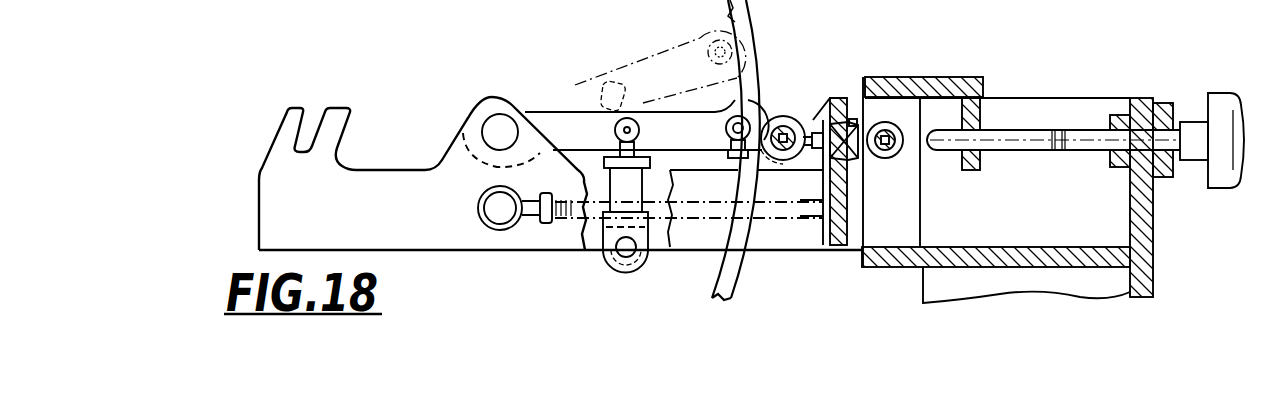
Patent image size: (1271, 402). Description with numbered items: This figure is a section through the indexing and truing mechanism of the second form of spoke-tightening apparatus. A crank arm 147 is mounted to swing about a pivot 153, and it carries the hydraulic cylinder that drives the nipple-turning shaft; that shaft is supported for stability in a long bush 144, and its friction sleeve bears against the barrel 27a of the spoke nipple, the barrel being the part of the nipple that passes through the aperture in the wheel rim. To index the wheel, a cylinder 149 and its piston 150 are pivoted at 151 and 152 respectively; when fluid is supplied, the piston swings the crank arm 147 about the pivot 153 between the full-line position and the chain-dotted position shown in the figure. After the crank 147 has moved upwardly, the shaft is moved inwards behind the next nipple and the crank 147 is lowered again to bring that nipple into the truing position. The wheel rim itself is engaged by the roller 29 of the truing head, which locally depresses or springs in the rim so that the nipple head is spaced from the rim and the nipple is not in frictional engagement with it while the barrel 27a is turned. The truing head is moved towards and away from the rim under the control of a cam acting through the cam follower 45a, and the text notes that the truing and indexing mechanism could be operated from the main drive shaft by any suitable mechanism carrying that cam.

The pivot 153 is at (500, 128).
The crank arm 147 is at (555, 125).
The pivot 151 is at (630, 118).
The piston 150 is at (638, 140).
The cylinder 149 is at (613, 196).
The pivot 152 is at (623, 252).
The long bush 144 is at (746, 117).
The nipple barrel 27a is at (736, 160).
The roller 29 is at (789, 118).
The cam follower 45a is at (858, 130).